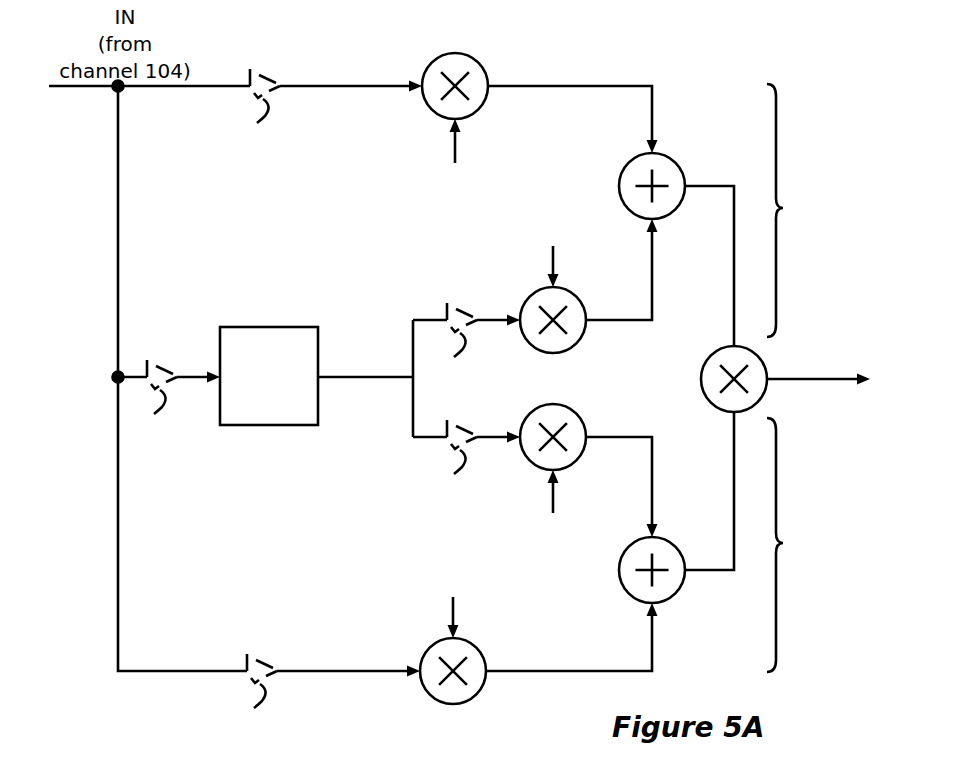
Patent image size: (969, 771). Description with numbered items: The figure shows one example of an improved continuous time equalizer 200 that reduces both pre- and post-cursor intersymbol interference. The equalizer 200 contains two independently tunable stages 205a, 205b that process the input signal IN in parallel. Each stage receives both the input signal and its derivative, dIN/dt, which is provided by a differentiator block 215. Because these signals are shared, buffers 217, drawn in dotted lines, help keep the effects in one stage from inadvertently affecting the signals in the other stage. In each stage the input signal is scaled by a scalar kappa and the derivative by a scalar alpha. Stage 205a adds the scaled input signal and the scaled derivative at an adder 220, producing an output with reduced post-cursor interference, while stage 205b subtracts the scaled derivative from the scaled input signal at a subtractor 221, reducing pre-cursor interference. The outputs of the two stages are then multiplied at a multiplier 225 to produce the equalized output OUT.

The continuous time equalizer 200 is at (736, 56).
The first stage 205a is at (806, 210).
The second stage 205b is at (806, 545).
The differentiator block 215 is at (300, 327).
The buffer 217 is at (299, 404).
The adder 220 is at (675, 156).
The subtractor 221 is at (670, 596).
The multiplier 225 is at (702, 372).